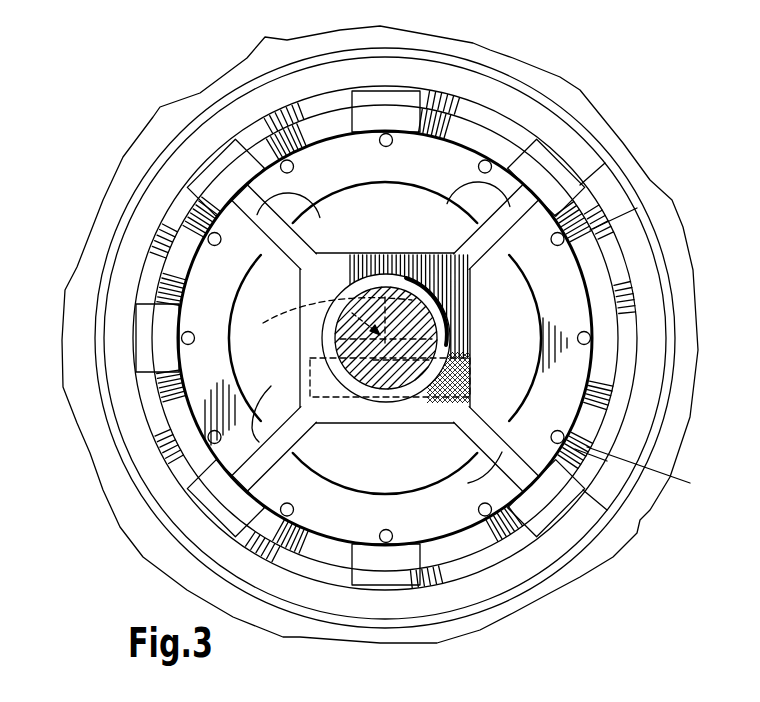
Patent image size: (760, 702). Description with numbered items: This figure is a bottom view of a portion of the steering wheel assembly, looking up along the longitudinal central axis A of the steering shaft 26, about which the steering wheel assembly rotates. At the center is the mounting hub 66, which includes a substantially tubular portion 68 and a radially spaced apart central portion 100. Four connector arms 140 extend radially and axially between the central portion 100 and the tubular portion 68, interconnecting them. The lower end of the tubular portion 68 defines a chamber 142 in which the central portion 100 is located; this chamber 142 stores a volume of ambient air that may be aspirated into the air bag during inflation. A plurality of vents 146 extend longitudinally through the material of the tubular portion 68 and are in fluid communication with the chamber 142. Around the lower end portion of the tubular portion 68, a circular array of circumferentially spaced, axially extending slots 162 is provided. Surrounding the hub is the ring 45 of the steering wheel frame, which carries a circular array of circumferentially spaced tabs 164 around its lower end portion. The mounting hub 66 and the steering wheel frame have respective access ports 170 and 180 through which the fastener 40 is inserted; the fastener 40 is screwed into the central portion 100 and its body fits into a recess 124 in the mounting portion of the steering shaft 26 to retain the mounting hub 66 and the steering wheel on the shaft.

The tabs 164 is at (393, 112).
The ring 45 is at (513, 133).
The mounting hub 66 is at (600, 234).
The tubular portion 68 is at (597, 290).
The steering shaft 26 is at (420, 318).
The fastener 40 is at (478, 374).
The connector arms 140 is at (313, 211).
The chamber 142 is at (427, 231).
The slots 162 is at (396, 108).
The central portion 100 is at (367, 424).
The recess 124 is at (387, 362).
The vents 146 is at (212, 236).
The access port 170 is at (593, 430).
The access port 180 is at (600, 443).
The longitudinal central axis A is at (257, 326).